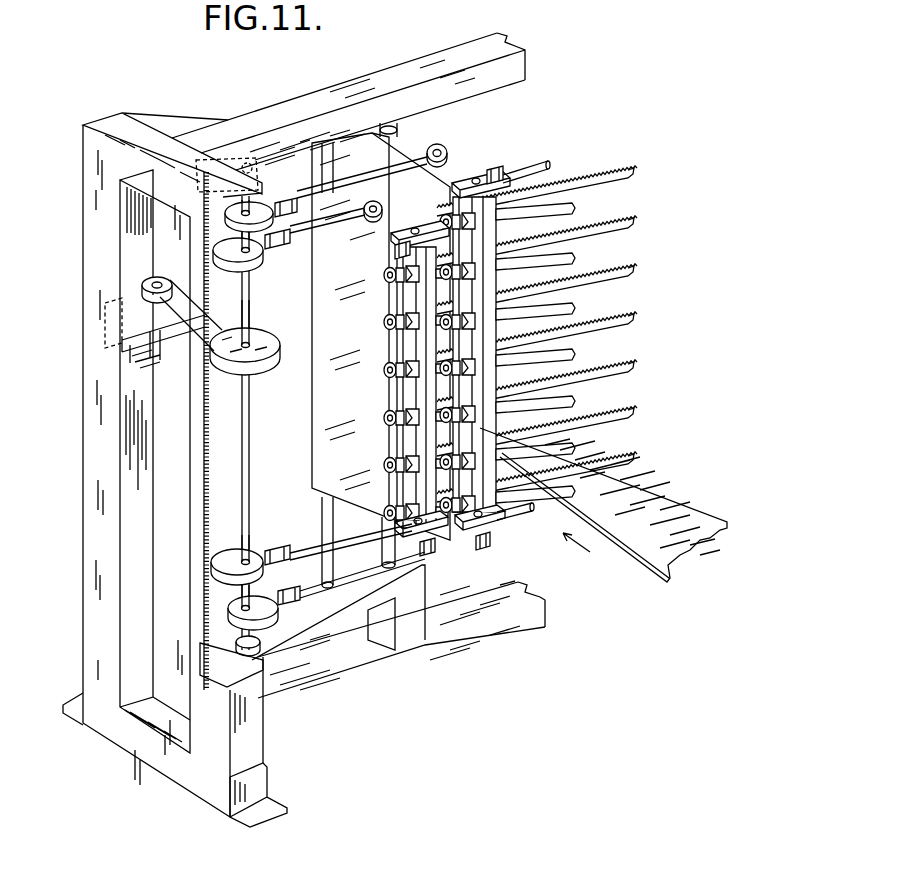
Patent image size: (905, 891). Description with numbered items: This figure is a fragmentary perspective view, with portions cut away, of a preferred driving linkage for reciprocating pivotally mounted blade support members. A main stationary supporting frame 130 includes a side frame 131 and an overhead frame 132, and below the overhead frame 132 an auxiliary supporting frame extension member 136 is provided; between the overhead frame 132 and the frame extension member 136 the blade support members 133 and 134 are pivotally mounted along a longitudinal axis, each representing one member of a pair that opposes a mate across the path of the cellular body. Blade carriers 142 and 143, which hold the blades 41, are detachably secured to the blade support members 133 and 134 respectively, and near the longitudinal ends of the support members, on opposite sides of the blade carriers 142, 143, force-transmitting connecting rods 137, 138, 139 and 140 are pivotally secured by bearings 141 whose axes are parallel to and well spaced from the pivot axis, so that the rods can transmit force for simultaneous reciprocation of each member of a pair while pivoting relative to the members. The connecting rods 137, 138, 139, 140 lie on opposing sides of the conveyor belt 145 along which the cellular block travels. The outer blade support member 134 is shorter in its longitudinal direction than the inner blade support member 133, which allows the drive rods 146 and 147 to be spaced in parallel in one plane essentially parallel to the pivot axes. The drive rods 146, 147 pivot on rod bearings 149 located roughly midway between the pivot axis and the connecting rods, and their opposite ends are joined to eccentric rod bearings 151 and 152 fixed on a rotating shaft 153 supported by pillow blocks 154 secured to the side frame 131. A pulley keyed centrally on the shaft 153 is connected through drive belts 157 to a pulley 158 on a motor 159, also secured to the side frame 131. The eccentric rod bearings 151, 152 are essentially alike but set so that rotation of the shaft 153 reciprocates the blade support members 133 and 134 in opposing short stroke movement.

The saw blades 41 is at (575, 210).
The main stationary supporting frame 130 is at (113, 116).
The side frame 131 is at (92, 427).
The overhead frame 132 is at (393, 70).
The blade support member 133 is at (422, 188).
The blade support member 134 is at (316, 428).
The auxiliary supporting frame extension member 136 is at (340, 610).
The connecting rod 137 is at (540, 160).
The connecting rod 138 is at (525, 519).
The connecting rod 139 is at (437, 228).
The connecting rod 140 is at (442, 535).
The bearings 141 is at (496, 172).
The blade carrier 142 is at (495, 202).
The blade carrier 143 is at (427, 335).
The conveyor belt 145 is at (630, 553).
The drive rod 146 is at (360, 180).
The drive rod 147 is at (298, 238).
The rod bearings 149 is at (441, 149).
The eccentric rod bearing 151 is at (226, 228).
The eccentric rod bearing 152 is at (213, 256).
The rotating shaft 153 is at (248, 476).
The pillow blocks 154 is at (262, 169).
The drive belts 157 is at (228, 308).
The pulley 158 is at (162, 281).
The motor 159 is at (196, 309).